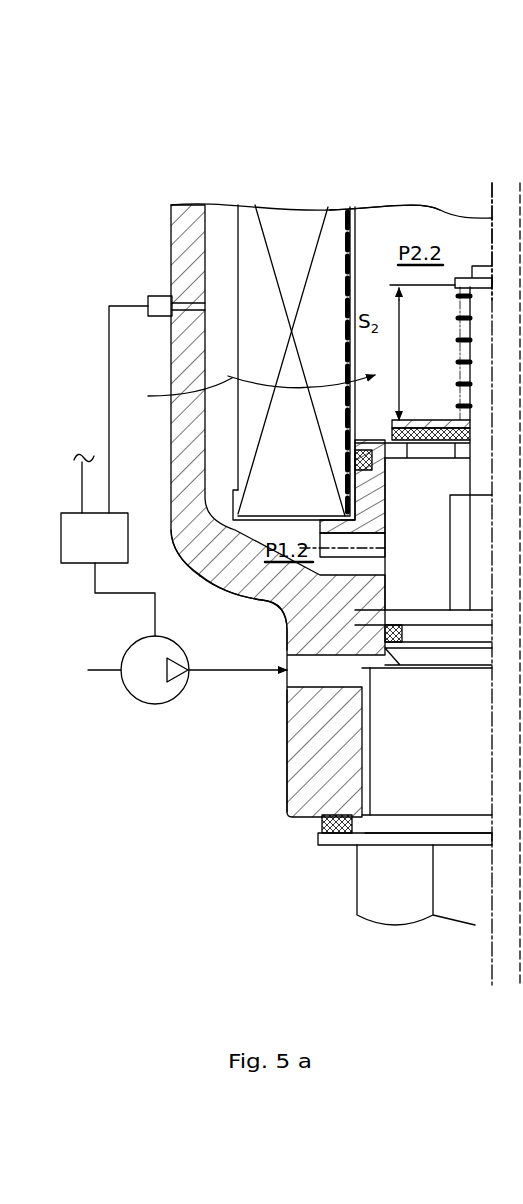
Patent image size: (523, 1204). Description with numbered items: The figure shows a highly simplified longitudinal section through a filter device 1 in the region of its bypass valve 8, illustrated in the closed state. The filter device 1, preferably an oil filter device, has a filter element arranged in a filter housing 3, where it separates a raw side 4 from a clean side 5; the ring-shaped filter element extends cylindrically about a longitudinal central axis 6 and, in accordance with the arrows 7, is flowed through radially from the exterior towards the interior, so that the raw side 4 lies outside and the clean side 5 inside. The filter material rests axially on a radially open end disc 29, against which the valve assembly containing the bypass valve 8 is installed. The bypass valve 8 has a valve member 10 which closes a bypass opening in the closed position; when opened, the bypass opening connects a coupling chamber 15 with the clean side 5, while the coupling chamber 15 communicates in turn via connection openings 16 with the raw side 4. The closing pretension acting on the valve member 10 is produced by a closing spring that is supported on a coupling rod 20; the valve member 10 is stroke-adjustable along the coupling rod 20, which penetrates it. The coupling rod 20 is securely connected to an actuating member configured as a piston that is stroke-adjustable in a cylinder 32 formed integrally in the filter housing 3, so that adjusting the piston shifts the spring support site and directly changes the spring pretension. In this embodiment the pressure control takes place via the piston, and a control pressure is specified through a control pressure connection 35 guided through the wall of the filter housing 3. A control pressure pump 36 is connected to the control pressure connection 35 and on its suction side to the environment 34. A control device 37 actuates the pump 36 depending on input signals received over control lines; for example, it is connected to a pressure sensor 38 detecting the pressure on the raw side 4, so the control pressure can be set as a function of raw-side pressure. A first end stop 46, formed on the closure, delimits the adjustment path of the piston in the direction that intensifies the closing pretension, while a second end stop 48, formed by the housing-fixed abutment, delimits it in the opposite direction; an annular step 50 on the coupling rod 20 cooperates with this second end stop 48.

The filter device 1 is at (203, 125).
The filter housing 3 is at (172, 240).
The raw side 4 is at (211, 322).
The clean side 5 is at (422, 230).
The longitudinal central axis 6 is at (490, 183).
The arrows 7 is at (250, 392).
The bypass valve 8 is at (403, 682).
The valve member 10 is at (430, 418).
The coupling chamber 15 is at (307, 637).
The connection openings 16 is at (263, 587).
The coupling rod 20 is at (463, 548).
The end disc 29 is at (203, 563).
The cylinder 32 is at (388, 503).
The environment 34 is at (76, 680).
The control pressure connection 35 is at (280, 687).
The control pressure pump 36 is at (140, 683).
The control device 37 is at (82, 550).
The pressure sensor 38 is at (148, 298).
The first end stop 46 is at (473, 668).
The second end stop 48 is at (465, 458).
The annular step 50 is at (460, 495).